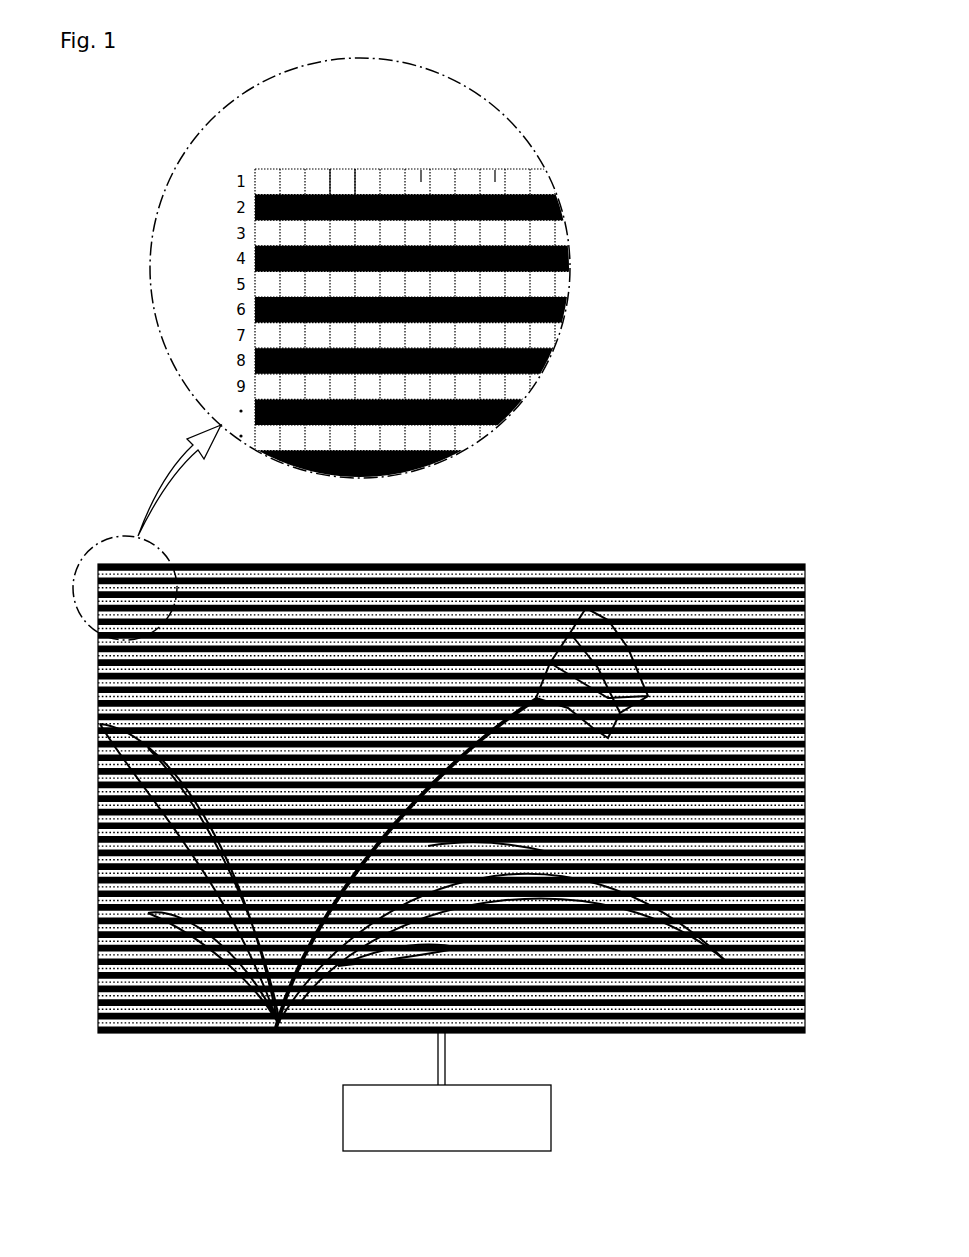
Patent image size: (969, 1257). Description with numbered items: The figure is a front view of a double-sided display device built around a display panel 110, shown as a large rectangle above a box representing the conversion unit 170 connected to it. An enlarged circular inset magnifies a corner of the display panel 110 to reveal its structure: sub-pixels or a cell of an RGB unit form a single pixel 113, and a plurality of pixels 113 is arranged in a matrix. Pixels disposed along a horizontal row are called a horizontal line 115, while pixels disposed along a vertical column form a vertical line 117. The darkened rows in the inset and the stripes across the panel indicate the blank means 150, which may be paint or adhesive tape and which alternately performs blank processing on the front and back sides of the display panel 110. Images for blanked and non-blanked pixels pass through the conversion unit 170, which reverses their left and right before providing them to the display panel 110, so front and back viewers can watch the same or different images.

The display panel 110 is at (713, 556).
The pixel 113 is at (488, 161).
The horizontal line 115 is at (246, 213).
The vertical line 117 is at (318, 161).
The blank means 150 is at (247, 352).
The conversion unit 170 is at (545, 1088).